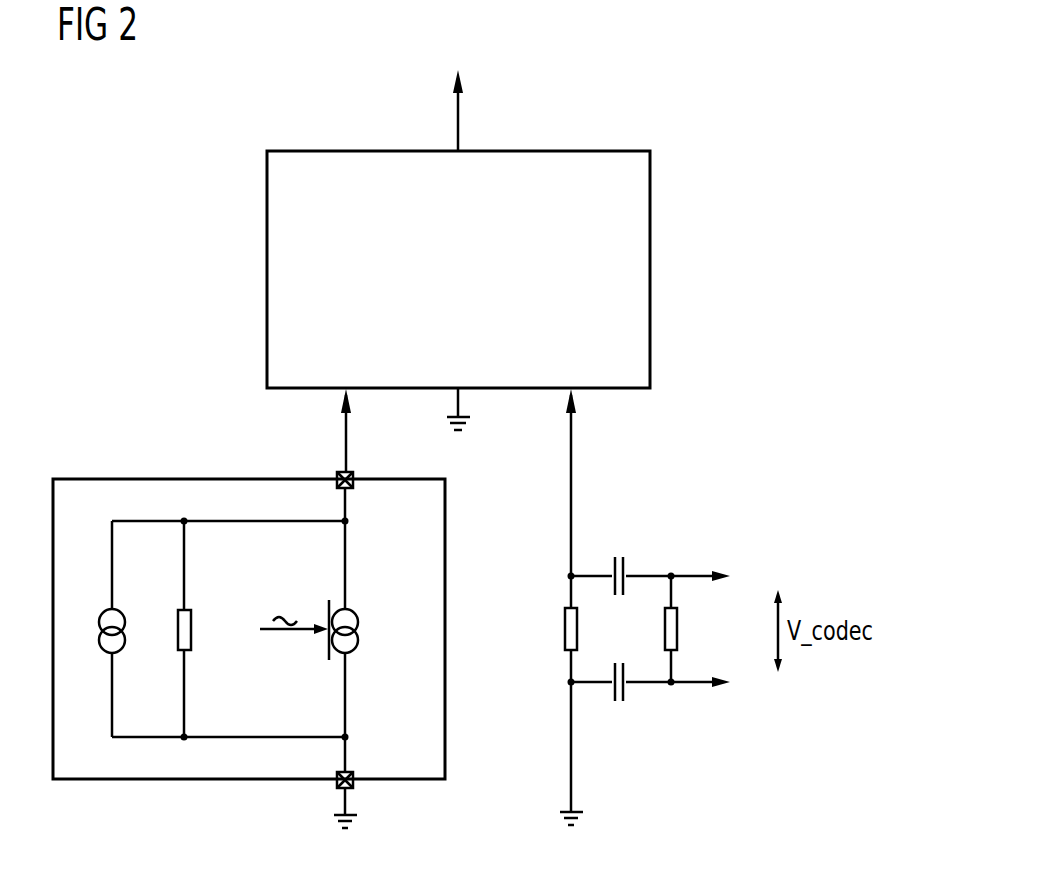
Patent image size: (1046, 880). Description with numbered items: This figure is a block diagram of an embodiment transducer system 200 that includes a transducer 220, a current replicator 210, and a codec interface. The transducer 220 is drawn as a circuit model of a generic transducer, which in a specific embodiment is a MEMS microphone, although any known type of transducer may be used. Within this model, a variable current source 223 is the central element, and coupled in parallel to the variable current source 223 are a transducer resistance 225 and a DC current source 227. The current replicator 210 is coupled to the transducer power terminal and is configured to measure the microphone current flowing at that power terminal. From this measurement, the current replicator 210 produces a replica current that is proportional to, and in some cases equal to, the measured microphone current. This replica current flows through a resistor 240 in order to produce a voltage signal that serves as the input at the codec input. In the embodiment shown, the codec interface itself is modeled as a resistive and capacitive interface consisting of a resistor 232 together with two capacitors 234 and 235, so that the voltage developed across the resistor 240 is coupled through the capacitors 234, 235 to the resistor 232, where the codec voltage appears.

The transducer system 200 is at (678, 73).
The current replicator 210 is at (650, 268).
The transducer 220 is at (203, 478).
The variable current source 223 is at (360, 640).
The transducer resistance 225 is at (192, 630).
The DC current source 227 is at (100, 607).
The resistor 232 is at (665, 630).
The capacitor 234 is at (618, 555).
The capacitor 235 is at (618, 710).
The resistor 240 is at (563, 630).